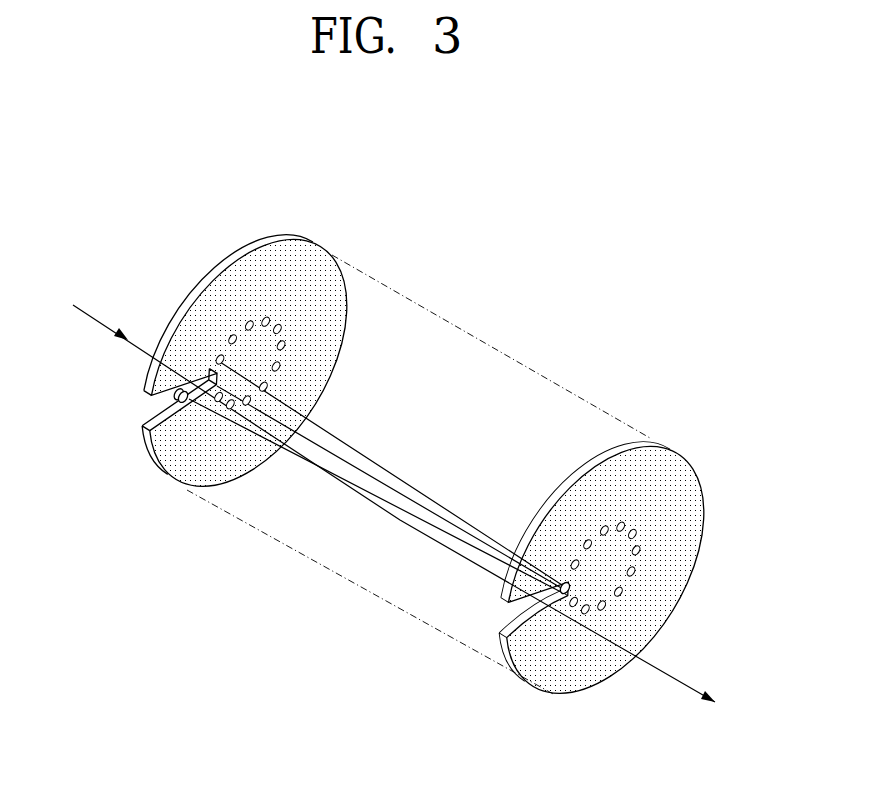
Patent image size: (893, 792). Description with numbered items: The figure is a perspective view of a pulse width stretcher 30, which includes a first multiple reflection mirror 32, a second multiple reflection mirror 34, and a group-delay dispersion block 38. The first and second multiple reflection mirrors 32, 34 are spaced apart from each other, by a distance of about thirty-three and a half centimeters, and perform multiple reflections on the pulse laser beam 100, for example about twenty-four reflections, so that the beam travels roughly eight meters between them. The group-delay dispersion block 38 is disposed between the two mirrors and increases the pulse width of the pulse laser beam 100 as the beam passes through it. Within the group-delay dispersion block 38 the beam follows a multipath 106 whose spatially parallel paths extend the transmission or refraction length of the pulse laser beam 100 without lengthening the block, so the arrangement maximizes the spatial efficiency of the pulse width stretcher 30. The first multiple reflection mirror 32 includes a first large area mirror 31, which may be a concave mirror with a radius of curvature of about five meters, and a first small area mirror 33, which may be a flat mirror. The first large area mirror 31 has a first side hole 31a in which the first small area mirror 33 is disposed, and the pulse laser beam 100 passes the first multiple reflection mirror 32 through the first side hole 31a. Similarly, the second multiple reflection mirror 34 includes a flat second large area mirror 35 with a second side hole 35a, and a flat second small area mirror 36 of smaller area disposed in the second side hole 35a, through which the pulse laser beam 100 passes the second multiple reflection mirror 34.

The pulse width stretcher 30 is at (596, 318).
The first large area mirror 31 is at (177, 470).
The first side hole 31a is at (139, 406).
The first multiple reflection mirror 32 is at (216, 375).
The first small area mirror 33 is at (137, 441).
The second multiple reflection mirror 34 is at (572, 581).
The second large area mirror 35 is at (533, 675).
The second side hole 35a is at (496, 612).
The second small area mirror 36 is at (506, 638).
The group-delay dispersion block 38 is at (330, 571).
The pulse laser beam 100 is at (99, 316).
The multipath 106 is at (340, 495).